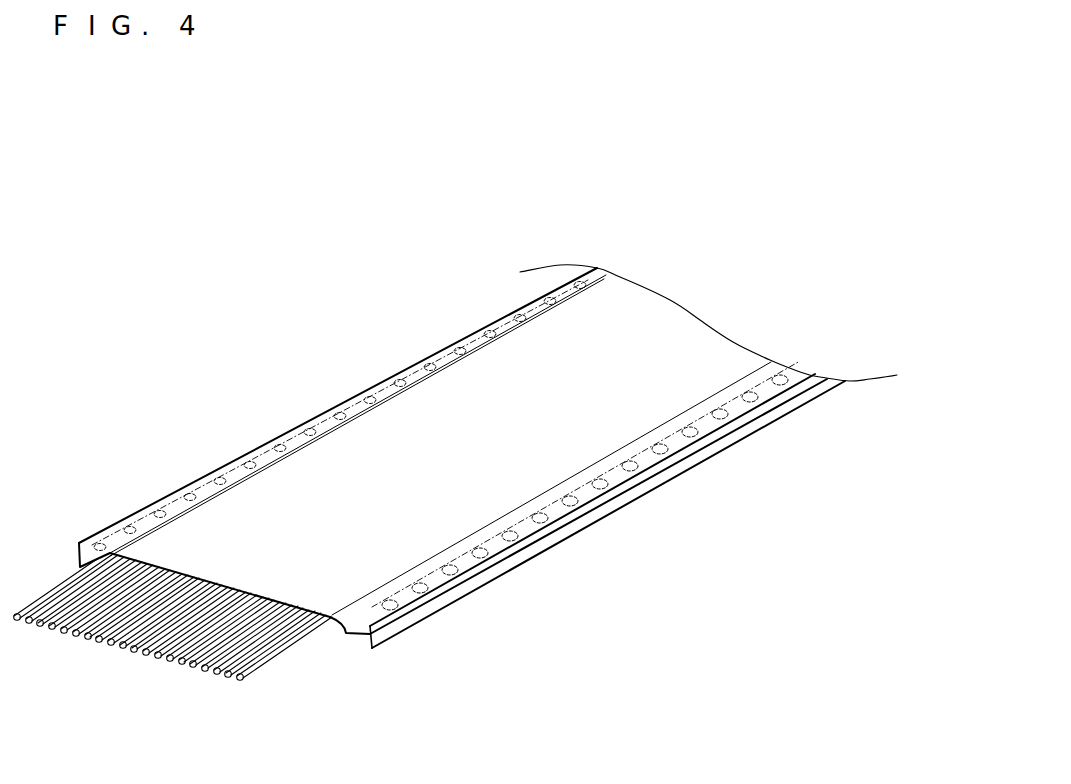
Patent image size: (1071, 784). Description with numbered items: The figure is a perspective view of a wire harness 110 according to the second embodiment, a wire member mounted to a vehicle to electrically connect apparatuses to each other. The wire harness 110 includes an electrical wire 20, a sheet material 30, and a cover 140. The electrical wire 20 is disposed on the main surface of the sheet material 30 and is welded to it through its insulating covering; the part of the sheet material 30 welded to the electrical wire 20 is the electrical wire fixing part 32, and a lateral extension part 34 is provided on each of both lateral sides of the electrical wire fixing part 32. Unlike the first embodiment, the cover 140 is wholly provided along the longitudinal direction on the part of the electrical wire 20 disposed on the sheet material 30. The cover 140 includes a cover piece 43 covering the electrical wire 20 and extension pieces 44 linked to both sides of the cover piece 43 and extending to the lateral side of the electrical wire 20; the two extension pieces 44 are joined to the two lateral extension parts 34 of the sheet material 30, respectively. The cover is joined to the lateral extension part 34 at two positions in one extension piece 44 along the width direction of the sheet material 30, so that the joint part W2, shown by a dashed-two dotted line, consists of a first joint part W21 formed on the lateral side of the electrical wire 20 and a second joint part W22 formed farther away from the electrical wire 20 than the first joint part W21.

The wire harness 110 is at (181, 172).
The cover 140 is at (660, 314).
The electrical wire 20 is at (198, 667).
The sheet material 30 is at (683, 463).
The electrical wire fixing part 32 is at (332, 628).
The lateral extension part 34 is at (78, 566).
The cover piece 43 is at (322, 592).
The extension piece 44 is at (110, 544).
The first joint part W21 is at (293, 423).
The second joint part W22 is at (180, 483).
The joint part W2 is at (600, 606).